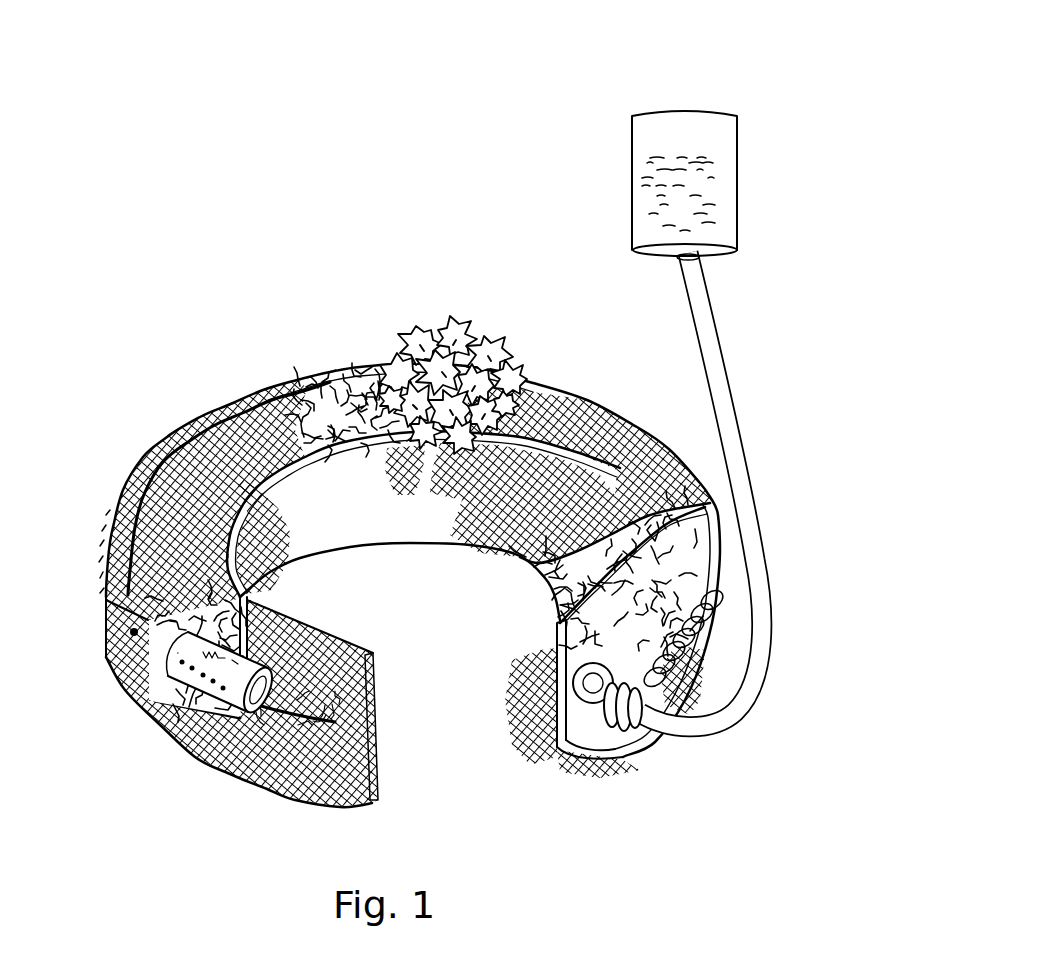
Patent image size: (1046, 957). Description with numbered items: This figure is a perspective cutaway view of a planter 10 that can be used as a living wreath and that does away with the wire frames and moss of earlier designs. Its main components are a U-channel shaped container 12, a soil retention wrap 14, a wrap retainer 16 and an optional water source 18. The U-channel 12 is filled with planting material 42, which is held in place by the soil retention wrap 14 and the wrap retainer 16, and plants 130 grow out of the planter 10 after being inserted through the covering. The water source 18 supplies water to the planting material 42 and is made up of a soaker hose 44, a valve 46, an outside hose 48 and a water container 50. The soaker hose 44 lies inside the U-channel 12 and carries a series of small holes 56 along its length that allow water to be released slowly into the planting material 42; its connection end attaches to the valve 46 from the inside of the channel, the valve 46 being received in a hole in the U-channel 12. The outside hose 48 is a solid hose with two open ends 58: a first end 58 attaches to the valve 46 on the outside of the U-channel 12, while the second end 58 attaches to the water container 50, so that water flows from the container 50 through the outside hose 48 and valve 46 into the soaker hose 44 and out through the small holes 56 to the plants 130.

The planter 10 is at (214, 93).
The U-channel shaped container 12 is at (372, 790).
The soil retention wrap 14 is at (195, 750).
The wrap retainer 16 is at (110, 647).
The water source 18 is at (830, 242).
The planting material 42 is at (108, 627).
The soaker hose 44 is at (582, 678).
The valve 46 is at (598, 770).
The outside hose 48 is at (720, 432).
The water container 50 is at (722, 142).
The small holes 56 is at (147, 707).
The open ends 58 is at (702, 260).
The plants 130 is at (428, 328).